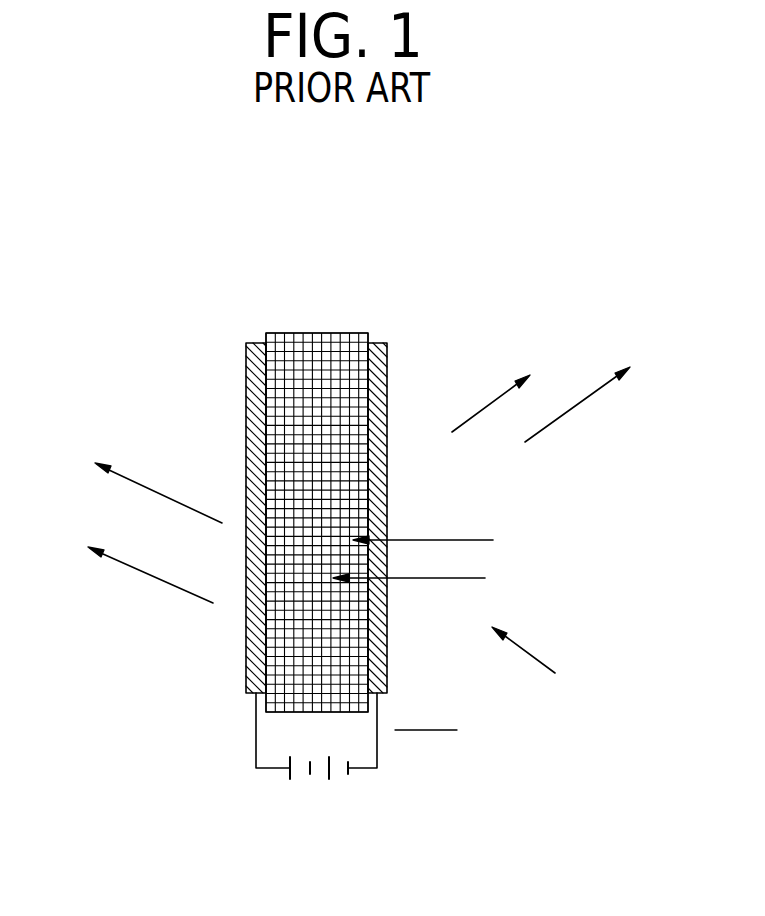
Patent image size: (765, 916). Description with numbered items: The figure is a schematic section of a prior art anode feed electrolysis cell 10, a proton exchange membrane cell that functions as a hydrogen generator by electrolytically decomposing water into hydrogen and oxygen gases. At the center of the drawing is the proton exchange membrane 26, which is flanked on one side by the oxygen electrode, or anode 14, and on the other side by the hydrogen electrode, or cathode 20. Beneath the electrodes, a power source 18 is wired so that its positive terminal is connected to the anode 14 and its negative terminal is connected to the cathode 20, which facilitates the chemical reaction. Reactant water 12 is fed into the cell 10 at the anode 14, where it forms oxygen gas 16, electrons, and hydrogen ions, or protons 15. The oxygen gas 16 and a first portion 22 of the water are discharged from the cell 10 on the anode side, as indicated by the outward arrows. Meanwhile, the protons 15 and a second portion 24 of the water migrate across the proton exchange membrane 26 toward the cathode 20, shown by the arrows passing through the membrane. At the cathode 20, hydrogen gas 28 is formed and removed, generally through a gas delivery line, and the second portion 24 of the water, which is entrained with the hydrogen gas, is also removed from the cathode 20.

The anode feed electrolysis cell 10 is at (388, 275).
The reactant water 12 is at (528, 650).
The oxygen electrode (anode) 14 is at (380, 345).
The hydrogen ions (protons) 15 is at (472, 538).
The oxygen gas 16 is at (493, 400).
The power source 18 is at (357, 786).
The hydrogen electrode (cathode) 20 is at (255, 343).
The first portion of water 22 is at (573, 408).
The second portion of water 24 is at (432, 580).
The proton exchange membrane 26 is at (328, 332).
The hydrogen gas 28 is at (157, 495).